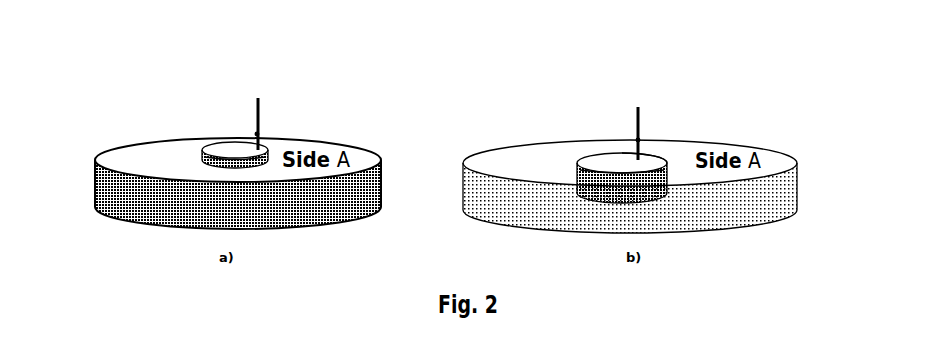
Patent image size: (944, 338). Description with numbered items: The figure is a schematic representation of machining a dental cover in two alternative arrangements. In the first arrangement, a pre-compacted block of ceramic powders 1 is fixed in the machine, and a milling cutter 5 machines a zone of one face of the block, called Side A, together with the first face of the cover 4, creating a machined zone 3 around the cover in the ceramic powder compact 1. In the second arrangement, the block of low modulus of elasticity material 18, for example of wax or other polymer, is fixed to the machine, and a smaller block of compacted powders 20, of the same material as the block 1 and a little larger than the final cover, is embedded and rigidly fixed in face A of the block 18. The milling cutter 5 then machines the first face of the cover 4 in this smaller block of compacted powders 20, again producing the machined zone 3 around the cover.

The pre-compacted block of ceramic powders 1 is at (125, 190).
The machined zone 3 is at (207, 155).
The first face of the cover 4 is at (240, 155).
The milling cutter 5 is at (263, 123).
The block of low modulus of elasticity material 18 is at (565, 150).
The smaller block of compacted powders 20 is at (645, 168).